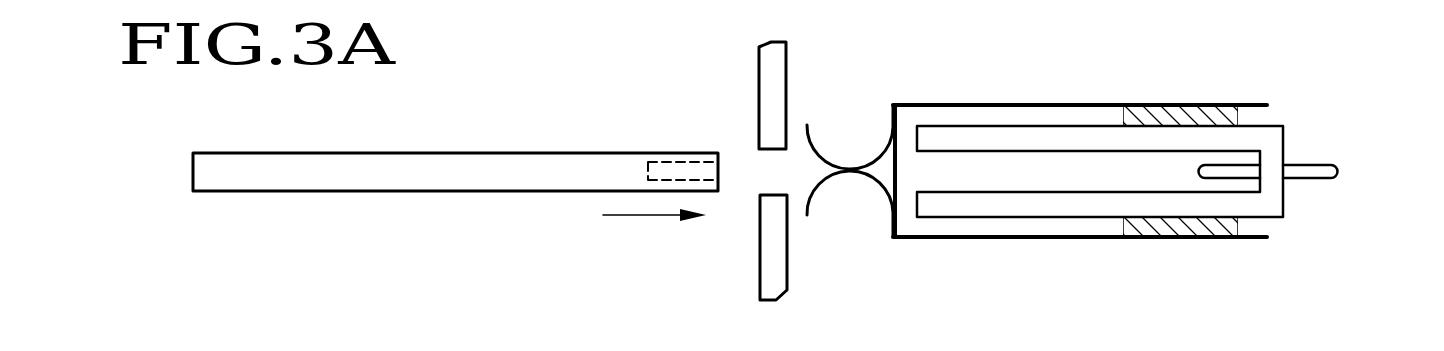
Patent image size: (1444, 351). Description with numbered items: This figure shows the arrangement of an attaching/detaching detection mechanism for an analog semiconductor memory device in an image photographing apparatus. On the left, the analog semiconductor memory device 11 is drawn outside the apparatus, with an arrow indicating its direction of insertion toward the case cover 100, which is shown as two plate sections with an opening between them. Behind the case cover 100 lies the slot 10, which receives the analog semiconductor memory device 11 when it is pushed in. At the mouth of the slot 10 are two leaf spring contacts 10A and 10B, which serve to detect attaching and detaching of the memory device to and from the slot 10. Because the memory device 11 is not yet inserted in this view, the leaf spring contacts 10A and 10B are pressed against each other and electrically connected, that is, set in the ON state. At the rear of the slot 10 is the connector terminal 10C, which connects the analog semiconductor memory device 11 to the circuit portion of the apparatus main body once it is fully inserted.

The slot 10 is at (1285, 140).
The leaf spring contact 10A is at (1267, 104).
The leaf spring contact 10B is at (1267, 238).
The connector terminal 10C is at (1307, 182).
The analog semiconductor memory device 11 is at (565, 152).
The case cover 100 is at (760, 262).